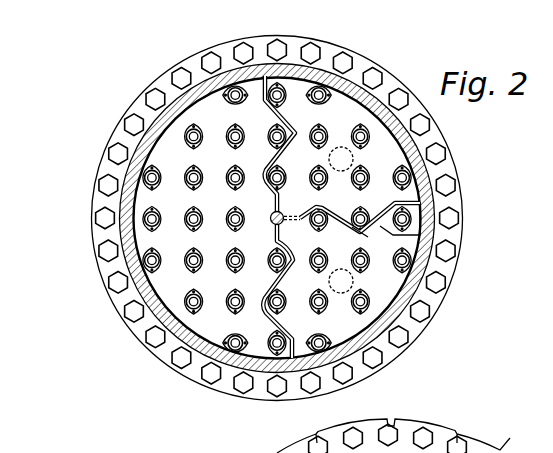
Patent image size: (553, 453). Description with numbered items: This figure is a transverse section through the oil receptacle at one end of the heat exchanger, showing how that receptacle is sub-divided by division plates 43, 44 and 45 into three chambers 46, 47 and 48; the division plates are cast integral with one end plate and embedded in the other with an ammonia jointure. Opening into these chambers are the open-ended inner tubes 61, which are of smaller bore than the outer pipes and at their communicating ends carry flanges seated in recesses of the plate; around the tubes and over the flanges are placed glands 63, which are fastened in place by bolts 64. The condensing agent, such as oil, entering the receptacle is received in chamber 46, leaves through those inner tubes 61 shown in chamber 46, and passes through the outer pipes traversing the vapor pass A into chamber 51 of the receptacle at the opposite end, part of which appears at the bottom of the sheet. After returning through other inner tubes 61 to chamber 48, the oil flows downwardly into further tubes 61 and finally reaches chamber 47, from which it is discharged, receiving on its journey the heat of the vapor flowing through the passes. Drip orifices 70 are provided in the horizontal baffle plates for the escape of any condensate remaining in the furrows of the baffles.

The chamber a (vapor pass) A is at (381, 157).
The division plate 43 is at (394, 228).
The division plate 44 is at (272, 317).
The division plate 45 is at (261, 82).
The chamber 46 is at (350, 112).
The chamber 47 is at (380, 300).
The chamber 48 is at (157, 121).
The chamber 51 is at (403, 436).
The open-ended tube 61 is at (367, 129).
The gland 63 is at (231, 124).
The bolt 64 is at (173, 143).
The drip orifice 70 is at (362, 234).